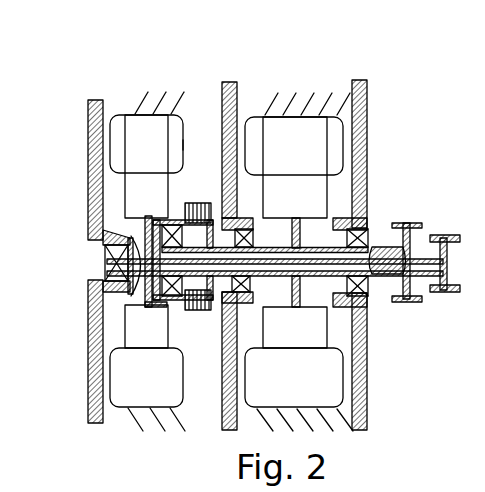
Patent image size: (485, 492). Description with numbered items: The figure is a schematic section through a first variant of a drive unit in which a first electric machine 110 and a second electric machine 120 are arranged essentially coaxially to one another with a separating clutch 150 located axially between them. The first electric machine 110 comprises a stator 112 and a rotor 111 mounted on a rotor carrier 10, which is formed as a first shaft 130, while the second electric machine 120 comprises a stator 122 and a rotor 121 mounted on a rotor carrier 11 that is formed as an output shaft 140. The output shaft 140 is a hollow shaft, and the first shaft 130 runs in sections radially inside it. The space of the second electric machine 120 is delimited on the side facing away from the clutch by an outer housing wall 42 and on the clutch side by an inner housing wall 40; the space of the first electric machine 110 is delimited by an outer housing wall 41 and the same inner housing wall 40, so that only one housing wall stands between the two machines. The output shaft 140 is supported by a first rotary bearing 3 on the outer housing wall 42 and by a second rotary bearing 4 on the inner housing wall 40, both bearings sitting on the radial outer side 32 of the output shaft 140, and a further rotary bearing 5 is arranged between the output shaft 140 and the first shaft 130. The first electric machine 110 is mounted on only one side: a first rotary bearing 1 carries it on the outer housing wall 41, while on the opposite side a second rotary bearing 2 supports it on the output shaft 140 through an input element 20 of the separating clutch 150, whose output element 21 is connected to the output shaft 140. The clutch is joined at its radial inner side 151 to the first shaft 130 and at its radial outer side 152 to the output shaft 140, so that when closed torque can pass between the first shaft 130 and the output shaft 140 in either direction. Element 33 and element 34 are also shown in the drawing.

The first rotary bearing of the first electric machine 1 is at (105, 252).
The second rotary bearing of the first electric machine 2 is at (122, 241).
The first rotary bearing of the second electric machine 3 is at (244, 295).
The second rotary bearing of the second electric machine 4 is at (363, 286).
The rotary bearing of the output shaft 5 is at (410, 270).
The rotor carrier 10 is at (127, 274).
The first shaft 130 is at (91, 287).
The rotor carrier 11 is at (308, 246).
The output shaft 140 is at (334, 203).
The input element 20 is at (174, 312).
The output element 21 is at (183, 311).
The radial outer side 32 is at (126, 286).
The shaft end member 33 is at (424, 228).
The coupling block 34 is at (389, 246).
The inner housing wall 40 is at (229, 82).
The outer housing wall 41 is at (95, 100).
The outer housing wall 42 is at (358, 80).
The first electric machine 110 is at (122, 86).
The rotor 111 is at (133, 197).
The stator 112 is at (118, 136).
The second electric machine 120 is at (261, 82).
The rotor 121 is at (318, 190).
The stator 122 is at (332, 125).
The separating clutch 150 is at (192, 160).
The radial inner side 151 is at (193, 204).
The radial outer side 152 is at (140, 226).